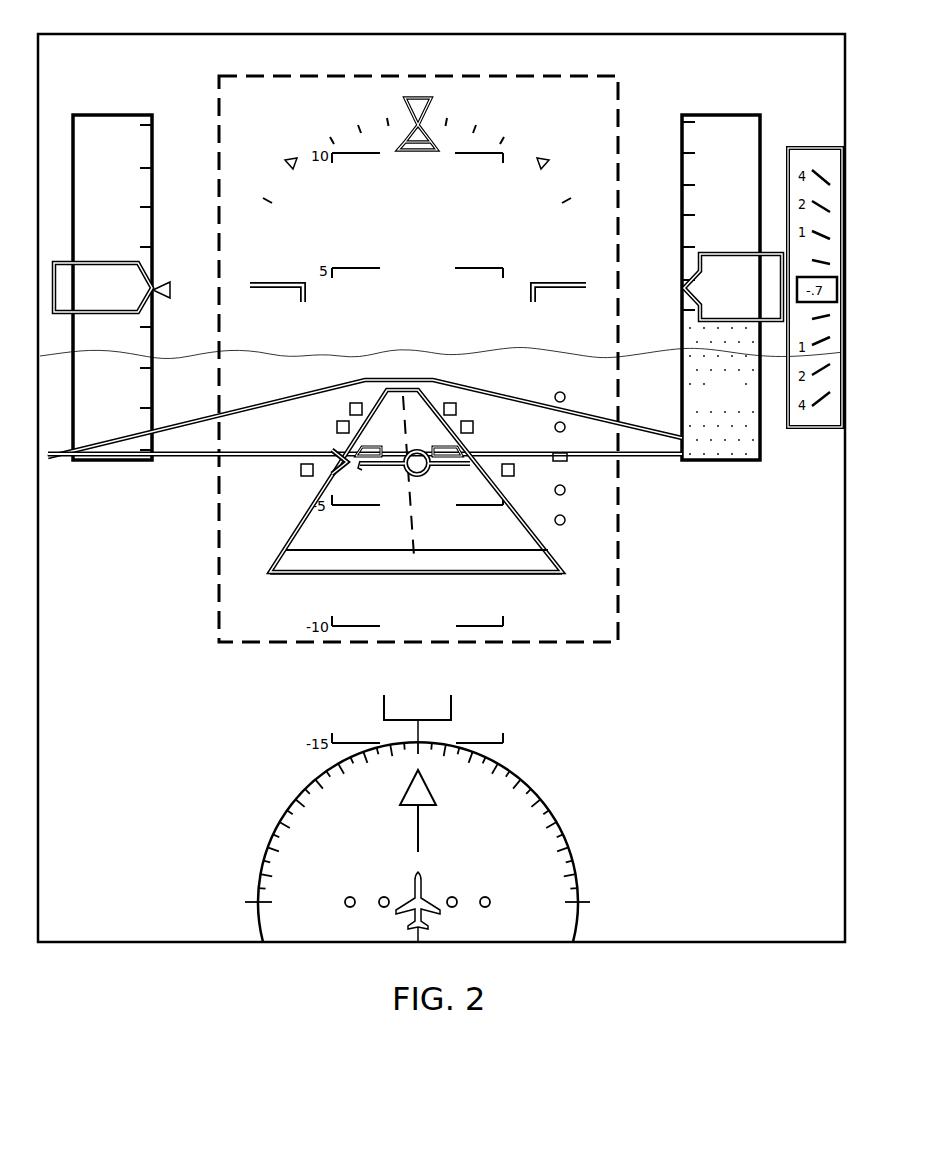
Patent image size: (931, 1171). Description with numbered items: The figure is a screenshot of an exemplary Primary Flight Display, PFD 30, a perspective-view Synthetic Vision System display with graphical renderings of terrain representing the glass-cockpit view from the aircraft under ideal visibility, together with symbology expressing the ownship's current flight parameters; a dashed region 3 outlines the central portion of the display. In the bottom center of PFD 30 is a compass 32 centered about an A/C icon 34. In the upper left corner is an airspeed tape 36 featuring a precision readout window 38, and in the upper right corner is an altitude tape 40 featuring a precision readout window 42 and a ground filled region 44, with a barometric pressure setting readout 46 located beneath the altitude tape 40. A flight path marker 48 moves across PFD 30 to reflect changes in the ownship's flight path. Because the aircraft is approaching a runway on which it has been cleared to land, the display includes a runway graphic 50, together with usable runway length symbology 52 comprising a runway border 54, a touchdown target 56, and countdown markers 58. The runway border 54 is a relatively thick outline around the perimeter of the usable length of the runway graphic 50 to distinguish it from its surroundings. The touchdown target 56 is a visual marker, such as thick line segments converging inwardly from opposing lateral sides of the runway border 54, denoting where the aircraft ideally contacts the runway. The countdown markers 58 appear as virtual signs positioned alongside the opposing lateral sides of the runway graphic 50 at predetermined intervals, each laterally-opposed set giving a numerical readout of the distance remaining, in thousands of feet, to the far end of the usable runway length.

The Primary Flight Display 30 is at (441, 471).
The conformal flight display region 3 is at (620, 630).
The compass 32 is at (270, 840).
The A/C icon 34 is at (432, 900).
The airspeed tape 36 is at (152, 182).
The precision readout window 38 is at (108, 272).
The altitude tape 40 is at (682, 168).
The precision readout window 42 is at (700, 262).
The ground filled region 44 is at (733, 402).
The barometric pressure setting readout 46 is at (720, 490).
The flight path marker 48 is at (430, 471).
The runway graphic 50 is at (454, 546).
The usable runway length symbology 52 is at (365, 414).
The runway border 54 is at (283, 578).
The touchdown target 56 is at (446, 446).
The countdown markers 58 is at (349, 409).